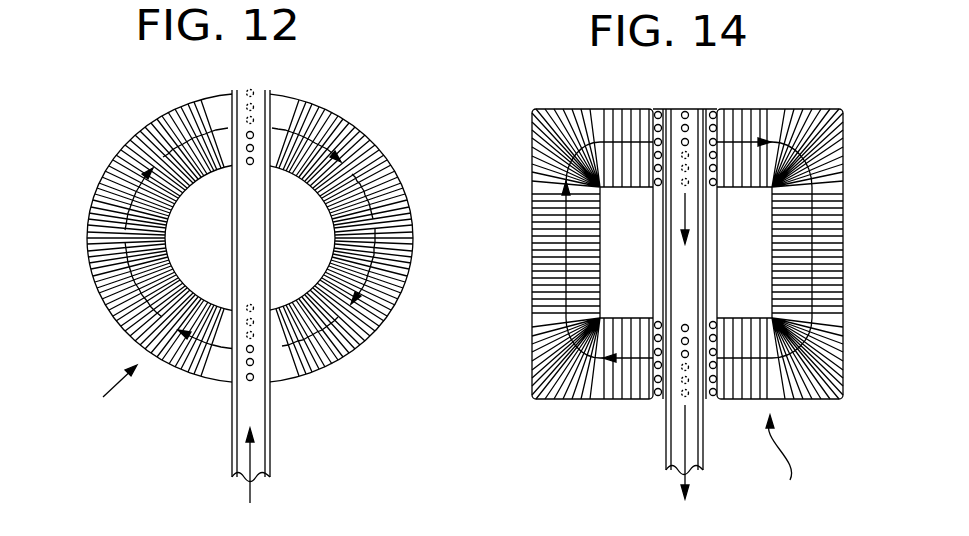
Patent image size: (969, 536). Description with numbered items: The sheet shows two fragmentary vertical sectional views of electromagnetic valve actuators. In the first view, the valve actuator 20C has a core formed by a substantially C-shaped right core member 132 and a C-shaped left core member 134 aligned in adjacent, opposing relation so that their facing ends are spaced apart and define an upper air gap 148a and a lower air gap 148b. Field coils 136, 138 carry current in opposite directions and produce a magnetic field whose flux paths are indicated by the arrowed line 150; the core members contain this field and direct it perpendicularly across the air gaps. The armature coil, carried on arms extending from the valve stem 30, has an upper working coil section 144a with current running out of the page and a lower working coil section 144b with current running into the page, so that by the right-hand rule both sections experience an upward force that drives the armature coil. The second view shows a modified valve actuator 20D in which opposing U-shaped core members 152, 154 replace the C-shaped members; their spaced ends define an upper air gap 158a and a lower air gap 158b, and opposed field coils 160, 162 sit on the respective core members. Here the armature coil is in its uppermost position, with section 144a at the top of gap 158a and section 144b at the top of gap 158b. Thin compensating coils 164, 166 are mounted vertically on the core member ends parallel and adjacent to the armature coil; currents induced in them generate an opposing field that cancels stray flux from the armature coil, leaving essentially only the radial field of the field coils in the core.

In FIG. 12, the valve actuator 20C is at (108, 394).
In FIG. 14, the modified valve actuator 20D is at (791, 462).
In FIG. 12, the valve stem 30 is at (263, 417).
In FIG. 14, the valve stem 30 is at (697, 430).
In FIG. 12, the right core member 132 is at (322, 103).
In FIG. 12, the left core member 134 is at (163, 108).
In FIG. 12, the field coil 136 is at (398, 273).
In FIG. 12, the field coil 138 is at (100, 282).
In FIG. 12, the upper working coil section 144a is at (247, 132).
In FIG. 12, the lower working coil section 144b is at (255, 378).
In FIG. 12, the upper air gap 148a is at (260, 105).
In FIG. 12, the lower air gap 148b is at (233, 302).
In FIG. 12, the arrowed line 150 is at (120, 180).
In FIG. 14, the core member 152 is at (828, 113).
In FIG. 14, the core member 154 is at (537, 125).
In FIG. 14, the upper air gap 158a is at (692, 128).
In FIG. 14, the lower air gap 158b is at (702, 325).
In FIG. 14, the field coil 160 is at (837, 202).
In FIG. 14, the field coil 162 is at (540, 163).
In FIG. 14, the compensating coil 164 is at (714, 183).
In FIG. 14, the compensating coil 166 is at (653, 188).